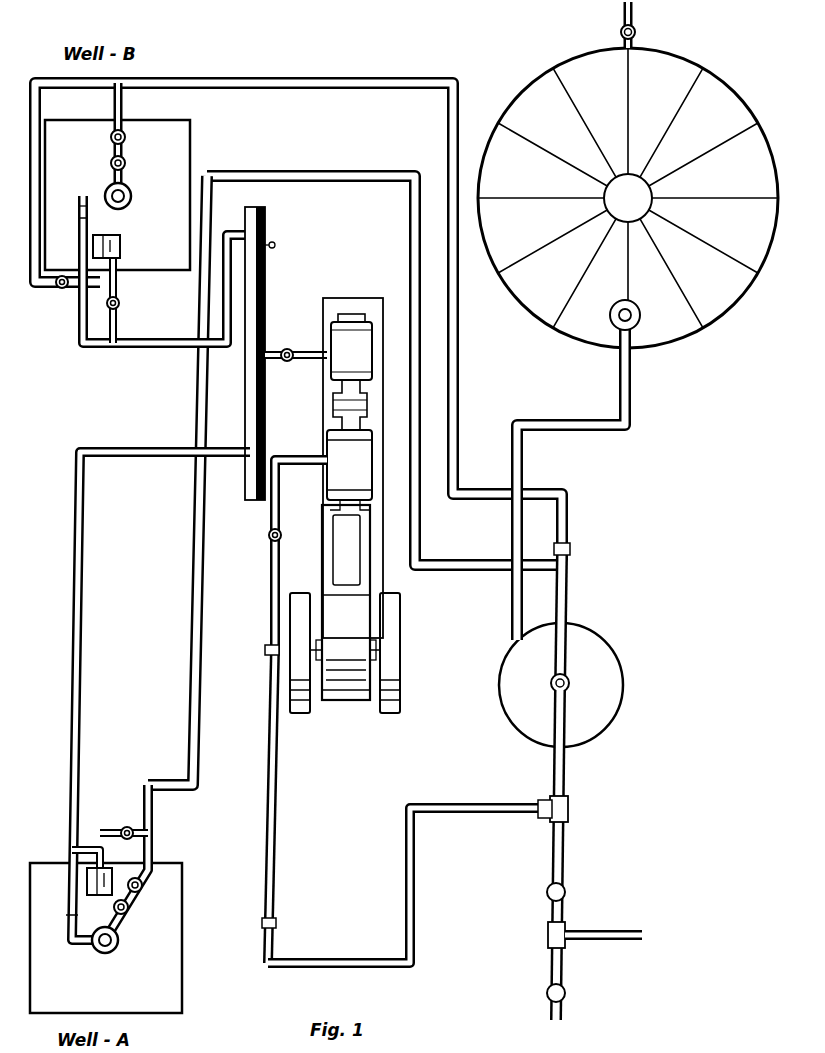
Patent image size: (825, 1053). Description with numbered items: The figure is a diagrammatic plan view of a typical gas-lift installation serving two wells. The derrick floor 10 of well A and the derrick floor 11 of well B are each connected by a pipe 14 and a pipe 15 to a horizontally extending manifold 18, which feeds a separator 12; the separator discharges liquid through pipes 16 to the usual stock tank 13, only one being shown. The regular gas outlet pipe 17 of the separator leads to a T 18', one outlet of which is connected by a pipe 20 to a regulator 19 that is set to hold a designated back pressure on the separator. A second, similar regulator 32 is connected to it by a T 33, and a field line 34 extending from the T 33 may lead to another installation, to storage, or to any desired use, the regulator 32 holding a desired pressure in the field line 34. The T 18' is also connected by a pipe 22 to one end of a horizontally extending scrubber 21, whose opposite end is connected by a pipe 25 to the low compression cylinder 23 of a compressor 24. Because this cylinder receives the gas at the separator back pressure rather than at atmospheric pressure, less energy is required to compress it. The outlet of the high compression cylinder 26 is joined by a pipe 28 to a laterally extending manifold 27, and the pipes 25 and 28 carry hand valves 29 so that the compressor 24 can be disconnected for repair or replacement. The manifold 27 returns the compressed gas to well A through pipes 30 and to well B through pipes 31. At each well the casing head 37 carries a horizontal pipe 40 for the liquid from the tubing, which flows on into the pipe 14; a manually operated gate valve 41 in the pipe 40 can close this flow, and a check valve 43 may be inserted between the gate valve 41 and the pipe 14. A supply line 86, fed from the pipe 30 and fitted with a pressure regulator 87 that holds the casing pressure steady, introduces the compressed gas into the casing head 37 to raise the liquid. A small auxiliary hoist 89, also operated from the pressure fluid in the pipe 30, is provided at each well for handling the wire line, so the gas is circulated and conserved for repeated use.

The derrick floor 10 is at (163, 986).
The derrick floor 11 is at (178, 134).
The separator 12 is at (610, 680).
The stock tank 13 is at (715, 300).
The pipe 14 is at (412, 240).
The pipe 15 is at (305, 80).
The pipe 16 is at (490, 437).
The gas outlet pipe 17 is at (552, 684).
The manifold 18 is at (589, 616).
The T 18' is at (581, 808).
The regulator 19 is at (566, 892).
The pipe 20 is at (566, 862).
The scrubber 21 is at (278, 807).
The pipe 22 is at (418, 890).
The low compression cylinder 23 is at (333, 443).
The compressor 24 is at (340, 702).
The pipe 25 is at (270, 580).
The high compression cylinder 26 is at (350, 322).
The manifold 27 is at (262, 278).
The pipe 28 is at (305, 362).
The hand valve 29 is at (287, 349).
The pipe 30 is at (88, 600).
The pipe 31 is at (160, 340).
The regulator 32 is at (566, 993).
The T 33 is at (550, 935).
The field line 34 is at (625, 930).
The casing head 37 is at (133, 195).
The pipe 40 is at (125, 115).
The gate valve 41 is at (126, 164).
The check valve 43 is at (126, 138).
The supply line 86 is at (80, 205).
The pressure regulator 87 is at (90, 218).
The auxiliary hoist 89 is at (120, 250).